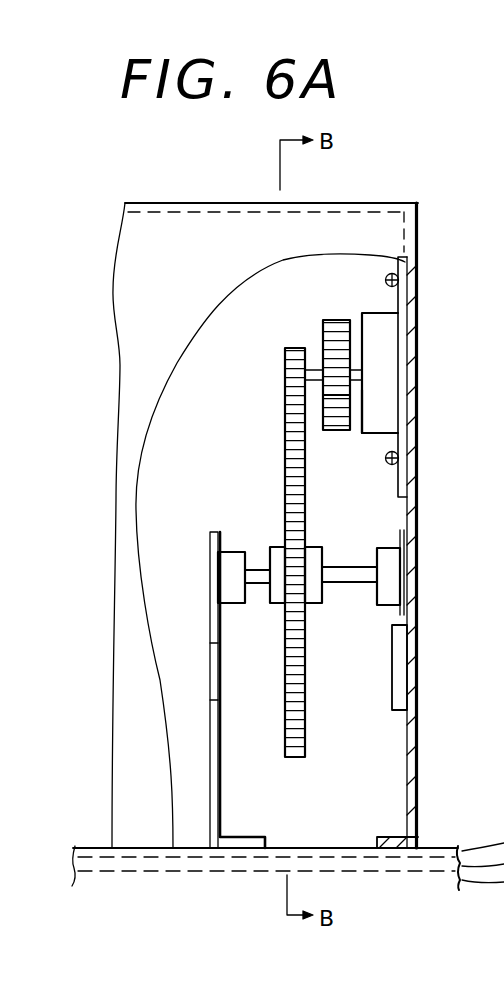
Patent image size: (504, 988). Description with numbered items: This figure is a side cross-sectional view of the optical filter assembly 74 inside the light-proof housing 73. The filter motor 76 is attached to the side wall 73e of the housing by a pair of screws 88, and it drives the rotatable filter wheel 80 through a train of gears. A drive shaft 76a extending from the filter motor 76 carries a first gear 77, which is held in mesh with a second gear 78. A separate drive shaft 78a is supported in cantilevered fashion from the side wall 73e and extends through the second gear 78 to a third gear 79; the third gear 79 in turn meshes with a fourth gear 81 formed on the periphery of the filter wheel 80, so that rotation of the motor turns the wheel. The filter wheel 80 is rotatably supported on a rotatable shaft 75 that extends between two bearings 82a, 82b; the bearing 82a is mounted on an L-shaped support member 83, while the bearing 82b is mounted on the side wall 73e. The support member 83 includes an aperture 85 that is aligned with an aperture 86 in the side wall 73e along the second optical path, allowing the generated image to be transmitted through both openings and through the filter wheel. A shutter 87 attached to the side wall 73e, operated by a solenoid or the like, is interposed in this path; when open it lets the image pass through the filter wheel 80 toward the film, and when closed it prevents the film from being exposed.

The light-proof housing 73 is at (388, 233).
The side wall 73e is at (421, 800).
The optical filter assembly 74 is at (305, 465).
The rotatable shaft 75 is at (346, 580).
The filter motor 76 is at (382, 328).
The drive shaft 76a is at (363, 391).
The first gear 77 is at (342, 367).
The second gear 78 is at (332, 318).
The drive shaft 78a is at (320, 373).
The third gear 79 is at (285, 356).
The filter wheel 80 is at (285, 455).
The fourth gear 81 is at (296, 436).
The bearing 82a is at (225, 575).
The bearing 82b is at (398, 566).
The L-shaped support member 83 is at (212, 815).
The aperture 85 is at (208, 683).
The aperture 86 is at (419, 671).
The shutter 87 is at (398, 712).
The screws 88 is at (400, 281).